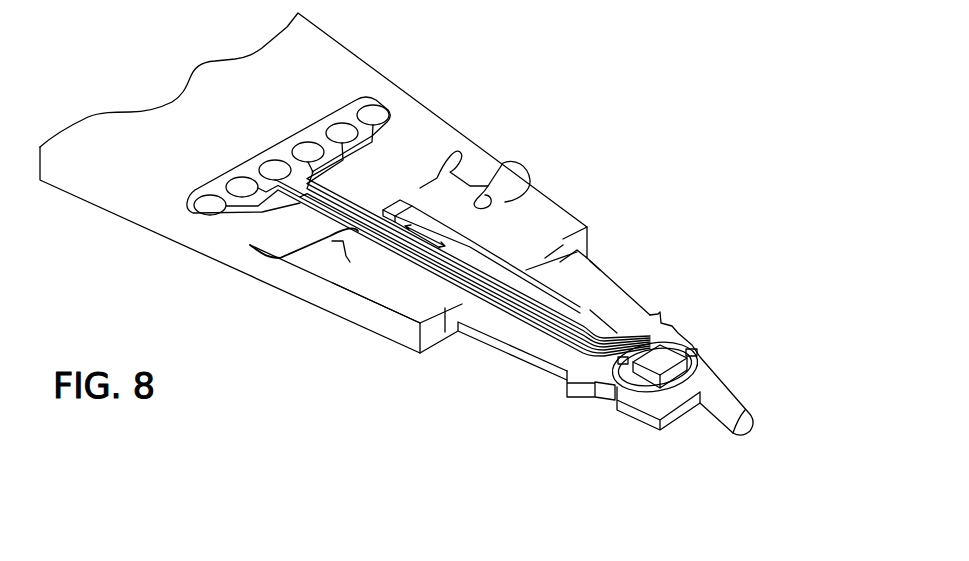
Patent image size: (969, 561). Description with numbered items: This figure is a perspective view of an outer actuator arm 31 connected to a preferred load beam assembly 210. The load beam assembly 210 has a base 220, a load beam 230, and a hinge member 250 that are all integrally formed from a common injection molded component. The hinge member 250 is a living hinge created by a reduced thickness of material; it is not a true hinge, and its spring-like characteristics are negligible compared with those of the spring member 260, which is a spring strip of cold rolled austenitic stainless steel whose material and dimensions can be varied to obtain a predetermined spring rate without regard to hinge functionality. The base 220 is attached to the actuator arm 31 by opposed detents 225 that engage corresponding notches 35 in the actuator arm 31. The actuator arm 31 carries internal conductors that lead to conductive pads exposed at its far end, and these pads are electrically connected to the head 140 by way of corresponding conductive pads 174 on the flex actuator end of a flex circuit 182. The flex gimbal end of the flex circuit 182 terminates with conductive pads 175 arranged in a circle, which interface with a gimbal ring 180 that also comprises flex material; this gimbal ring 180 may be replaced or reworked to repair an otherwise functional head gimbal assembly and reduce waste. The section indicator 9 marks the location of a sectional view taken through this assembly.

The outer actuator arm 31 is at (346, 62).
The conductive pads 174 is at (337, 122).
The flex circuit 182 is at (515, 315).
The base 220 is at (438, 192).
The opposed detents 225 is at (485, 180).
The notches 35 is at (500, 203).
The hinge member 250 is at (543, 253).
The load beam 230 is at (595, 268).
The spring member 260 is at (565, 314).
The conductive pads 175 is at (692, 350).
The gimbal ring 180 is at (715, 359).
The head 140 is at (668, 374).
The load beam assembly 210 is at (618, 512).
The section line 9- 9 is at (255, 145).